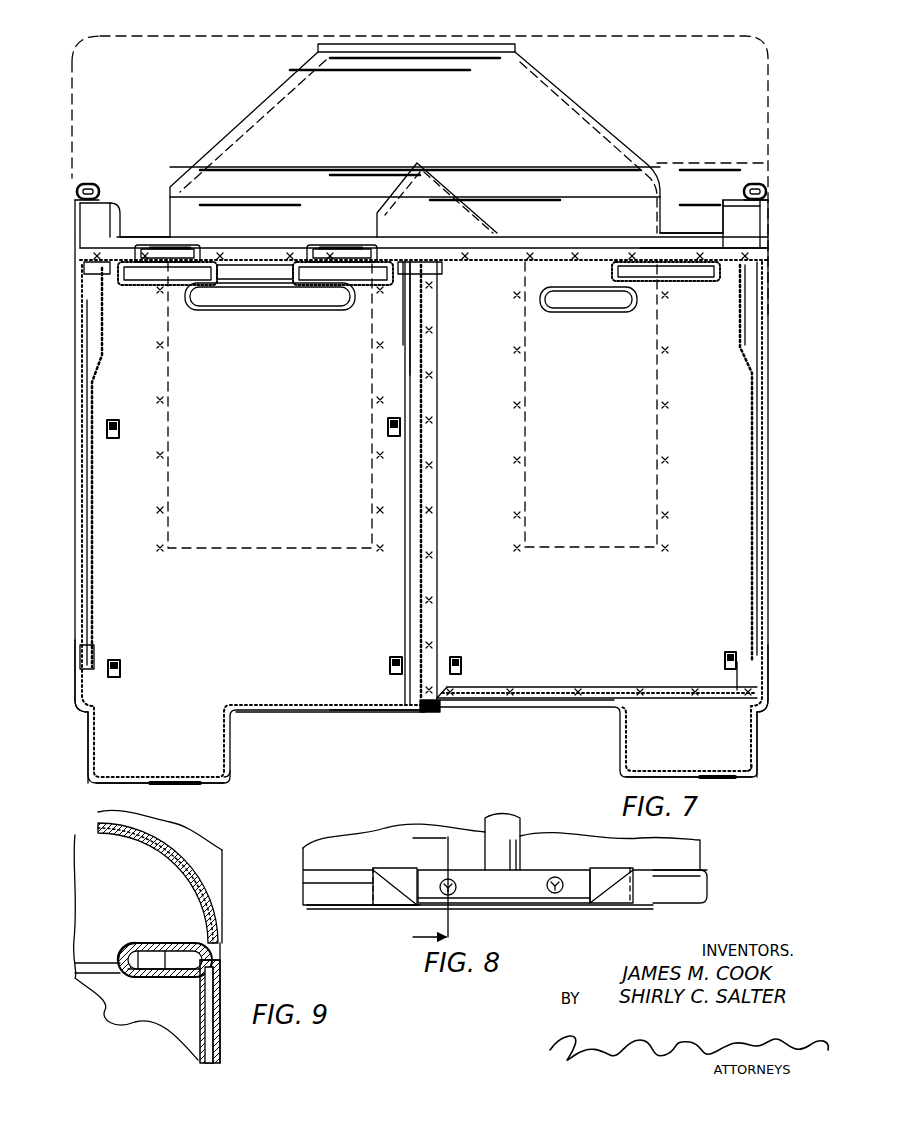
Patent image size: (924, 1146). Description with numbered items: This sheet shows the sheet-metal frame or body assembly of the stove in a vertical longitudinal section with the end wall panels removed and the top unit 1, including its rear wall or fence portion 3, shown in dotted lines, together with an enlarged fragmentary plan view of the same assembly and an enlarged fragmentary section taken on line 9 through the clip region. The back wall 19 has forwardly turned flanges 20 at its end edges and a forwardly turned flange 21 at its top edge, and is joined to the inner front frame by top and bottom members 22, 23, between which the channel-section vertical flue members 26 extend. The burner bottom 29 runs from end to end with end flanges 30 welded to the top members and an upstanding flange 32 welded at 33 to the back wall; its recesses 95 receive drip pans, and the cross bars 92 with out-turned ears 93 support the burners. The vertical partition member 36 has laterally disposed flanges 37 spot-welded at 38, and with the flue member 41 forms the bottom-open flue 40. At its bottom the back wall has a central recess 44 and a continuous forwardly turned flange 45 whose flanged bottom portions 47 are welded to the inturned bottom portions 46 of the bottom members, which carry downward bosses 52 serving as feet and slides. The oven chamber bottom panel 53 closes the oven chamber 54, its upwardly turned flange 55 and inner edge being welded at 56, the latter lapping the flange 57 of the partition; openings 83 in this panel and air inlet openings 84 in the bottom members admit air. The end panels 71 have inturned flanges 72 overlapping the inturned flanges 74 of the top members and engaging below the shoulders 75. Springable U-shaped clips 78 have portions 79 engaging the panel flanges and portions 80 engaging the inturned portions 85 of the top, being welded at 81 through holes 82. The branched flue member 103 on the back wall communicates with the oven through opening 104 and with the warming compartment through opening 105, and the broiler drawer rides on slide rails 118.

In FIG. 9, the top unit 1 is at (214, 870).
In FIG. 7, the rear wall or fence portion 3 is at (758, 40).
In FIG. 8, the inturned flange-like portions 9 is at (420, 887).
In FIG. 7, the back wall 19 is at (293, 712).
In FIG. 8, the back wall 19 is at (524, 842).
In FIG. 9, the back wall 19 is at (100, 1008).
In FIG. 7, the forwardly turned flanges 20 is at (75, 212).
In FIG. 9, the forwardly turned flanges 20 is at (206, 1042).
In FIG. 7, the forwardly turned flange 21 is at (121, 232).
In FIG. 8, the forwardly turned flange 21 is at (497, 830).
In FIG. 9, the forwardly turned flange 21 is at (83, 978).
In FIG. 7, the top member 22 is at (75, 252).
In FIG. 8, the top member 22 is at (341, 908).
In FIG. 9, the top member 22 is at (205, 994).
In FIG. 7, the bottom member 23 is at (81, 672).
In FIG. 7, the vertical flue members 26 is at (97, 532).
In FIG. 7, the burner bottom 29 is at (550, 260).
In FIG. 7, the end flanges 30 is at (741, 218).
In FIG. 7, the upstanding flange 32 is at (684, 250).
In FIG. 7, the weld 33 is at (670, 245).
In FIG. 7, the vertical partition member 36 is at (422, 413).
In FIG. 7, the laterally disposed flanges 37 is at (441, 272).
In FIG. 7, the spot welds 38 is at (427, 258).
In FIG. 7, the flue 40 is at (412, 372).
In FIG. 7, the flue member 41 is at (406, 344).
In FIG. 7, the central recess 44 is at (354, 712).
In FIG. 7, the forwardly turned flange 45 is at (399, 712).
In FIG. 7, the inturned bottom portions 46 is at (216, 785).
In FIG. 8, the inturned bottom portions 46 is at (696, 851).
In FIG. 7, the flanged bottom portions 47 is at (131, 781).
In FIG. 7, the downward bosses 52 is at (172, 786).
In FIG. 7, the oven chamber bottom panel 53 is at (528, 693).
In FIG. 7, the oven chamber 54 is at (742, 467).
In FIG. 7, the upwardly turned flange 55 is at (627, 692).
In FIG. 7, the welds 56 is at (582, 688).
In FIG. 7, the flange 57 is at (424, 716).
In FIG. 9, the end panels 71 is at (221, 1002).
In FIG. 9, the inturned flanges 72 is at (216, 958).
In FIG. 7, the inturned flanges 74 is at (76, 198).
In FIG. 8, the inturned flanges 74 is at (306, 884).
In FIG. 9, the inturned flanges 74 is at (220, 946).
In FIG. 7, the shoulders 75 is at (83, 720).
In FIG. 7, the clips 78 is at (743, 185).
In FIG. 8, the clips 78 is at (396, 868).
In FIG. 9, the clips 78 is at (125, 950).
In FIG. 7, the clip portions 79 is at (96, 187).
In FIG. 8, the clip portions 79 is at (600, 895).
In FIG. 9, the clip portions 79 is at (134, 945).
In FIG. 7, the clip portions 80 is at (88, 182).
In FIG. 8, the clip portions 80 is at (576, 895).
In FIG. 9, the clip portions 80 is at (140, 943).
In FIG. 8, the weld 81 is at (553, 893).
In FIG. 9, the weld 81 is at (167, 950).
In FIG. 8, the holes 82 is at (458, 893).
In FIG. 9, the holes 82 is at (182, 938).
In FIG. 7, the openings 83 is at (735, 693).
In FIG. 7, the air inlet openings 84 is at (90, 752).
In FIG. 9, the inturned portions 85 is at (216, 948).
In FIG. 7, the cross bars 92 is at (196, 253).
In FIG. 7, the out-turned ears 93 is at (252, 264).
In FIG. 7, the recesses 95 is at (136, 286).
In FIG. 7, the flue member 103 is at (616, 140).
In FIG. 7, the opening 104 is at (585, 312).
In FIG. 7, the opening 105 is at (243, 310).
In FIG. 7, the slide rails 118 is at (117, 420).